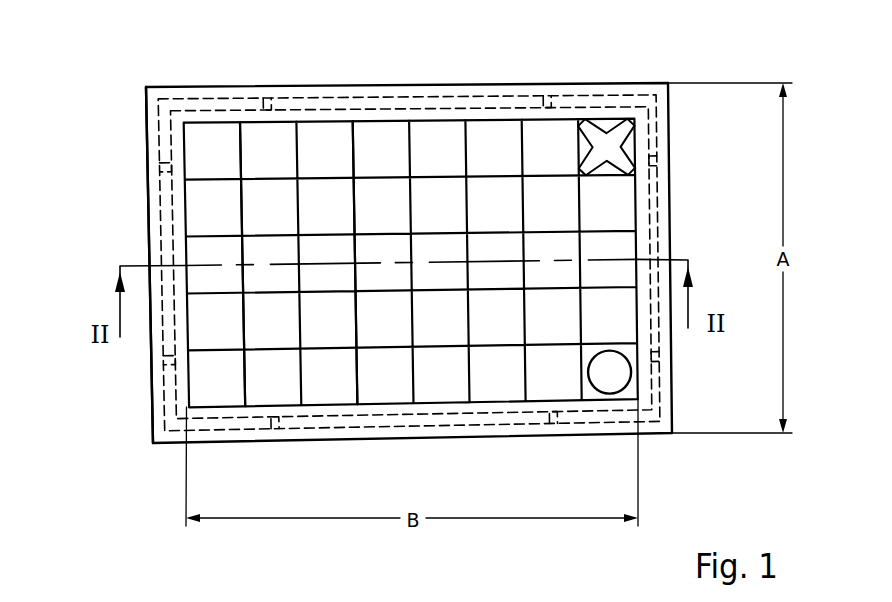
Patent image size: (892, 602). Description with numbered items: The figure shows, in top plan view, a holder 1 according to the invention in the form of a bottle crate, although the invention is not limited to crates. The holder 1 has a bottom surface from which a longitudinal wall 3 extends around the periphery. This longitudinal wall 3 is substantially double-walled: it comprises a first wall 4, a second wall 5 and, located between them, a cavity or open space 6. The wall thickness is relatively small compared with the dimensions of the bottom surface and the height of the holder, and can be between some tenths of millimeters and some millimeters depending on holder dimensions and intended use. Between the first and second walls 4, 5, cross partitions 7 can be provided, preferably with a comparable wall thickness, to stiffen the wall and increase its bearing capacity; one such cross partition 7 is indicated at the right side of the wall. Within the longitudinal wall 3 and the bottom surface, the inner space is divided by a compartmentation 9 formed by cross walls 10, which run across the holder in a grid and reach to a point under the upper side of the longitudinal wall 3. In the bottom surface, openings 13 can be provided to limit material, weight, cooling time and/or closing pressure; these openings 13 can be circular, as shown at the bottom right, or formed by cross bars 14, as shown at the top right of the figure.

The holder 1 is at (100, 462).
The longitudinal wall 3 is at (503, 437).
The first wall 4 is at (177, 151).
The second wall 5 is at (150, 188).
The cavity 6 is at (163, 225).
The cross partitions 7 is at (658, 362).
The compartmentation 9 is at (369, 148).
The cross walls 10 is at (237, 148).
The openings 13 is at (625, 144).
The cross bars 14 is at (591, 130).